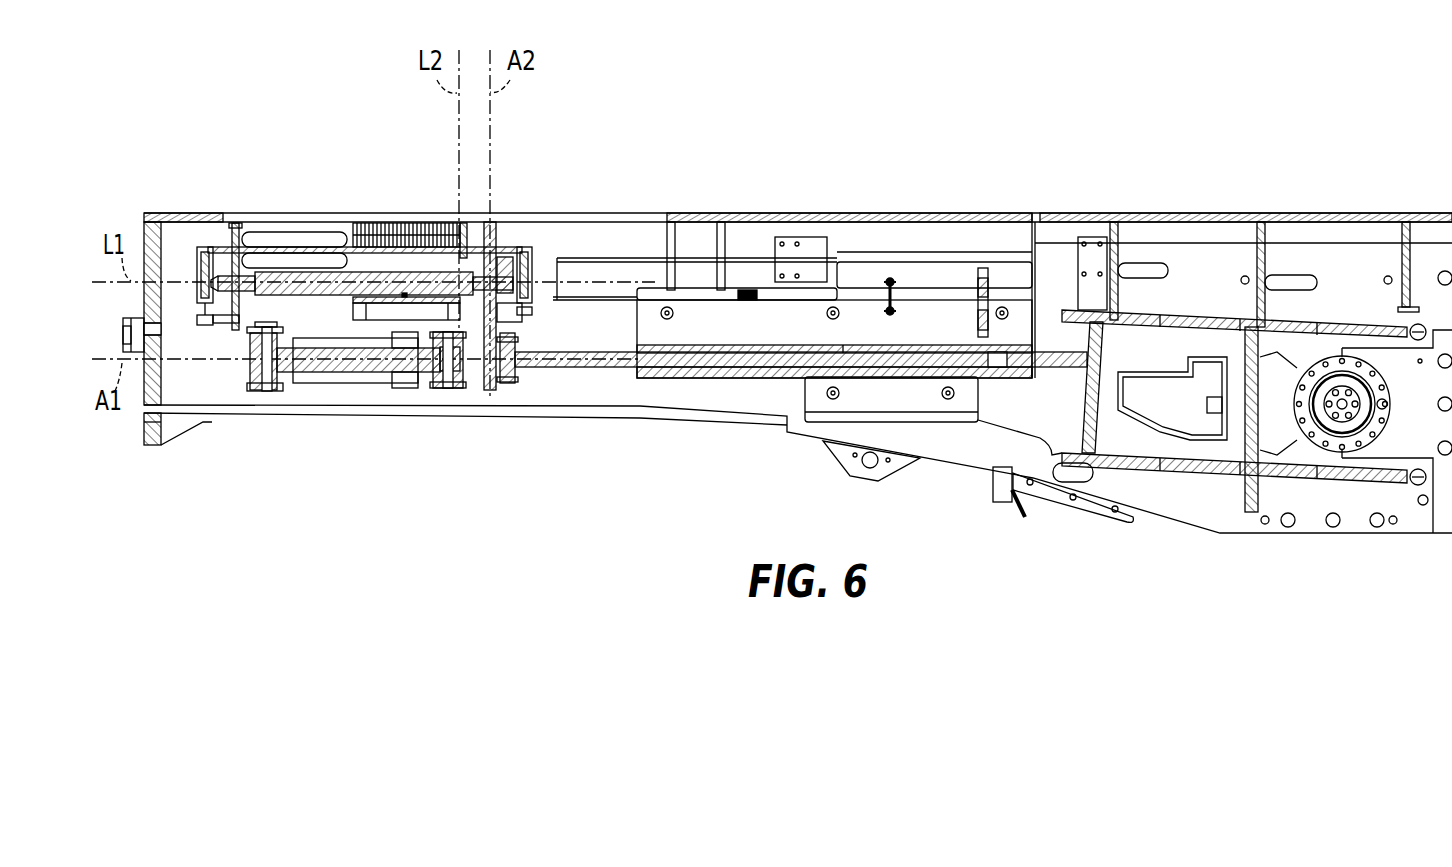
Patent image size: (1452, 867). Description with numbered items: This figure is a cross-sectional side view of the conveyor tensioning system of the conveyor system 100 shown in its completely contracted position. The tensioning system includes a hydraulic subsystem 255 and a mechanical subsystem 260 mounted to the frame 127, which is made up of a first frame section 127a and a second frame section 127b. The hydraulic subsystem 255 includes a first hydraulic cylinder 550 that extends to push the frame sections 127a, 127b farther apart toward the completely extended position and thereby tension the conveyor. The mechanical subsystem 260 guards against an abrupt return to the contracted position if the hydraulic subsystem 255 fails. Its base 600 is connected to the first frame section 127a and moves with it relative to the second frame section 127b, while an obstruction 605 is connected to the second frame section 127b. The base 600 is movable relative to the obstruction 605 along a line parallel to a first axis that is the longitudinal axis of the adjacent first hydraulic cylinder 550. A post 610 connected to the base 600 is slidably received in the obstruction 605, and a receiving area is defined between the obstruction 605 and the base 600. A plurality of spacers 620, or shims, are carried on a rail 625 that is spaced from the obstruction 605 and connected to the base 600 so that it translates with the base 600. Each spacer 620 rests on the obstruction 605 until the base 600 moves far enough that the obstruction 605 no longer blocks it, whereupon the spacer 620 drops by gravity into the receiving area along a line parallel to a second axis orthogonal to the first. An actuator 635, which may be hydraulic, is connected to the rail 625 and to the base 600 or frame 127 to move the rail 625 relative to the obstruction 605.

The conveyor system 100 is at (787, 276).
The frame 127 is at (798, 185).
The first frame section 127a is at (1388, 213).
The second frame section 127b is at (557, 213).
The hydraulic subsystem 255 is at (350, 397).
The mechanical subsystem 260 is at (398, 210).
The first hydraulic cylinder 550 is at (315, 386).
The base 600 is at (485, 392).
The obstruction 605 is at (337, 246).
The post 610 is at (267, 277).
The spacers 620 is at (452, 224).
The rail 625 is at (288, 246).
The actuator 635 is at (190, 303).